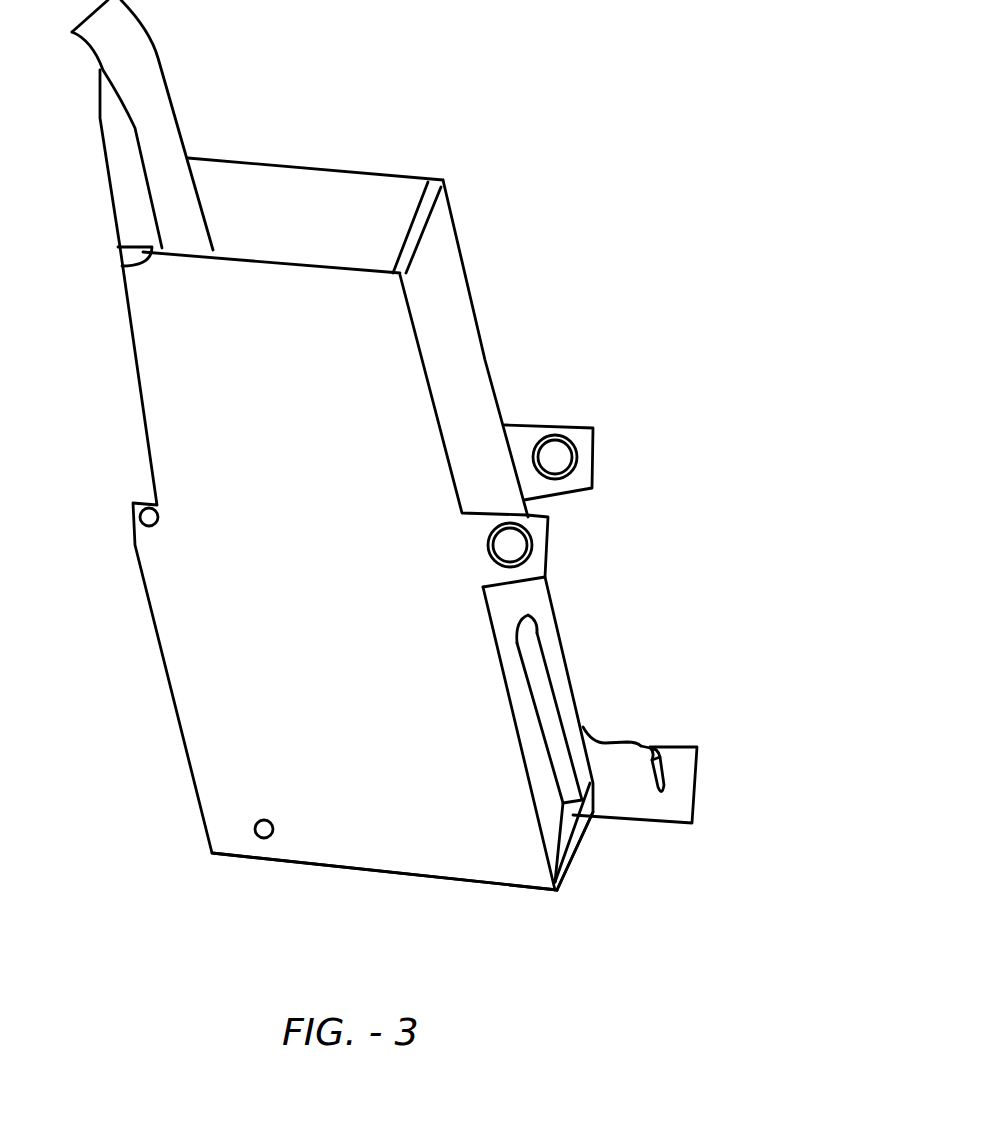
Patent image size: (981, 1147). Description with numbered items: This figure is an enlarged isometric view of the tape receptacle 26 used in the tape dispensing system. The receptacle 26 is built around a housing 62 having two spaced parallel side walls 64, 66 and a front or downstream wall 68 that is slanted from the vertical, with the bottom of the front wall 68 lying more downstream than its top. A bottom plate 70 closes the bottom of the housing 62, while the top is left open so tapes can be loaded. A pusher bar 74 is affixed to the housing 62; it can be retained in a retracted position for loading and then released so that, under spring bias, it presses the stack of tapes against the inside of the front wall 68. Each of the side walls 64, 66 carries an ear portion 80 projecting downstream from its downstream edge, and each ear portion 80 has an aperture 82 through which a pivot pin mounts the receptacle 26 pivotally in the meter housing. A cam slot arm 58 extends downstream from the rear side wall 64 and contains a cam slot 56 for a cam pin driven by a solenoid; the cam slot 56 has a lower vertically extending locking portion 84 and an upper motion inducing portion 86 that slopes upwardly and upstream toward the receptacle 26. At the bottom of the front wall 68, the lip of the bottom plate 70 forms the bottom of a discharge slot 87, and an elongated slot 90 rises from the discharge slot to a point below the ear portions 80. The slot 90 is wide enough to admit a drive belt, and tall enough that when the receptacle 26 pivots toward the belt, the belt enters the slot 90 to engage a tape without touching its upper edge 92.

The tape receptacle 26 is at (283, 480).
The housing 62 is at (170, 326).
The side wall 64 is at (330, 163).
The side wall 66 is at (122, 266).
The front wall 68 is at (430, 247).
The bottom plate 70 is at (567, 872).
The pusher bar 74 is at (140, 64).
The ear portion 80 is at (528, 437).
The aperture 82 is at (560, 458).
The locking portion 84 is at (660, 780).
The motion inducing portion 86 is at (662, 747).
The discharge slot 87 is at (590, 835).
The elongated slot 90 is at (573, 733).
The upper edge 92 is at (532, 637).
The cam slot 56 is at (713, 759).
The cam slot arm 58 is at (678, 802).